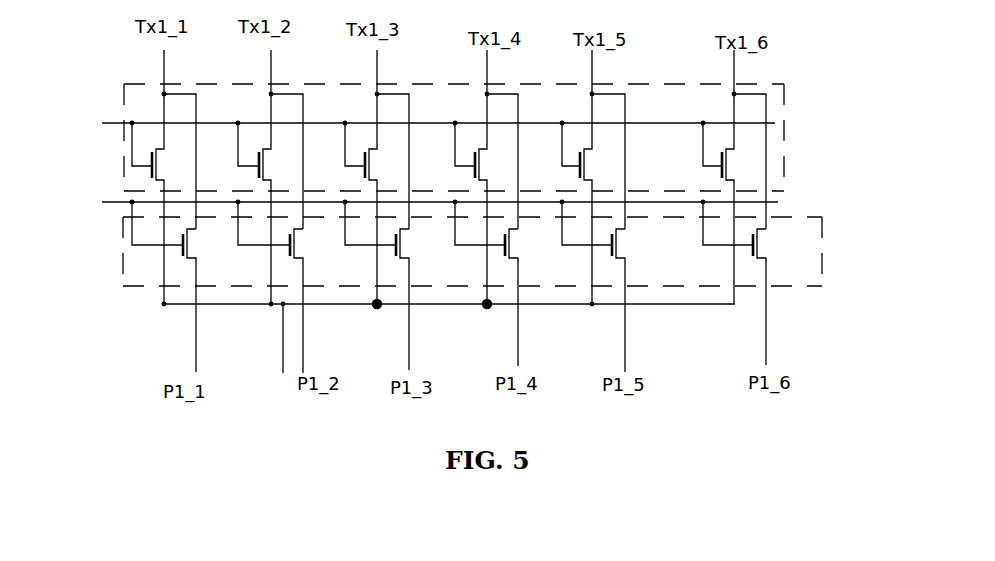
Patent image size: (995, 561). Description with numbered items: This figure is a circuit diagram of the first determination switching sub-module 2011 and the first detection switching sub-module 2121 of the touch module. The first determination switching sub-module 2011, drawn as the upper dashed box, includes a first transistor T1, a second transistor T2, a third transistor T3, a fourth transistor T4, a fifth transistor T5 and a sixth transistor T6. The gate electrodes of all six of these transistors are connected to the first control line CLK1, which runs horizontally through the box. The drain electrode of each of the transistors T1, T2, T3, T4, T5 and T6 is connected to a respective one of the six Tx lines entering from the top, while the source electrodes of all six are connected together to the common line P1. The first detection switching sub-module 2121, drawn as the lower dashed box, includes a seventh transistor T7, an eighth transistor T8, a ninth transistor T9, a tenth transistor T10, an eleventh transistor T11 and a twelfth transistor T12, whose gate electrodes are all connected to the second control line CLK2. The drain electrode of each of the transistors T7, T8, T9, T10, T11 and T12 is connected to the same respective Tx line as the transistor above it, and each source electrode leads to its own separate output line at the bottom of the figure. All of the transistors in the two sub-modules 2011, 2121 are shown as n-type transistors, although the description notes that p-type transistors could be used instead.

The first determination switching sub-module 2011 is at (442, 177).
The first detection switching sub-module 2121 is at (456, 283).
The first transistor T1 is at (163, 177).
The second transistor T2 is at (269, 177).
The third transistor T3 is at (376, 177).
The fourth transistor T4 is at (485, 177).
The fifth transistor T5 is at (592, 177).
The sixth transistor T6 is at (733, 177).
The seventh transistor T7 is at (172, 286).
The eighth transistor T8 is at (279, 286).
The ninth transistor T9 is at (384, 285).
The tenth transistor T10 is at (500, 283).
The eleventh transistor T11 is at (610, 286).
The twelfth transistor T12 is at (755, 282).
The first control line CLK1 is at (408, 122).
The second control line CLK2 is at (410, 202).
The P1 line P1 is at (279, 348).